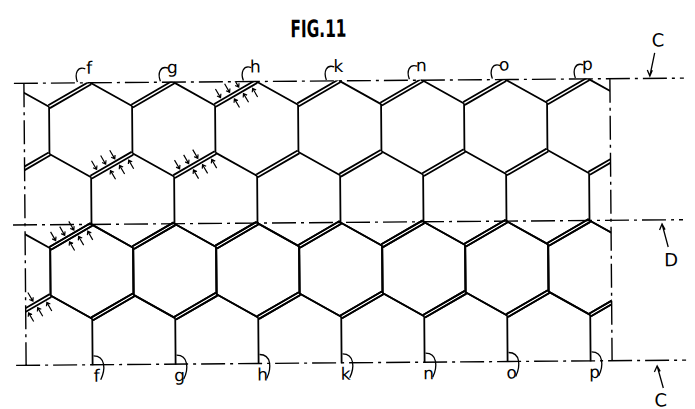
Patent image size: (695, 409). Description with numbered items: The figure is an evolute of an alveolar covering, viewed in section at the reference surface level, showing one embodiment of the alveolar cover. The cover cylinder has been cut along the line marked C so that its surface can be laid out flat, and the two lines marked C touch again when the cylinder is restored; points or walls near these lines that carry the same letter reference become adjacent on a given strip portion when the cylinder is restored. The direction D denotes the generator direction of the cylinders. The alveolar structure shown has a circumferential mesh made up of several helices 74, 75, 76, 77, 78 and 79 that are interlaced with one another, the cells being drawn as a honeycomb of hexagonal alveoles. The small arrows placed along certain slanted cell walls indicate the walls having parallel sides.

The helix 74 is at (94, 197).
The helix 75 is at (176, 197).
The helix 76 is at (260, 197).
The helix 77 is at (342, 197).
The helix 78 is at (426, 197).
The helix 79 is at (508, 197).